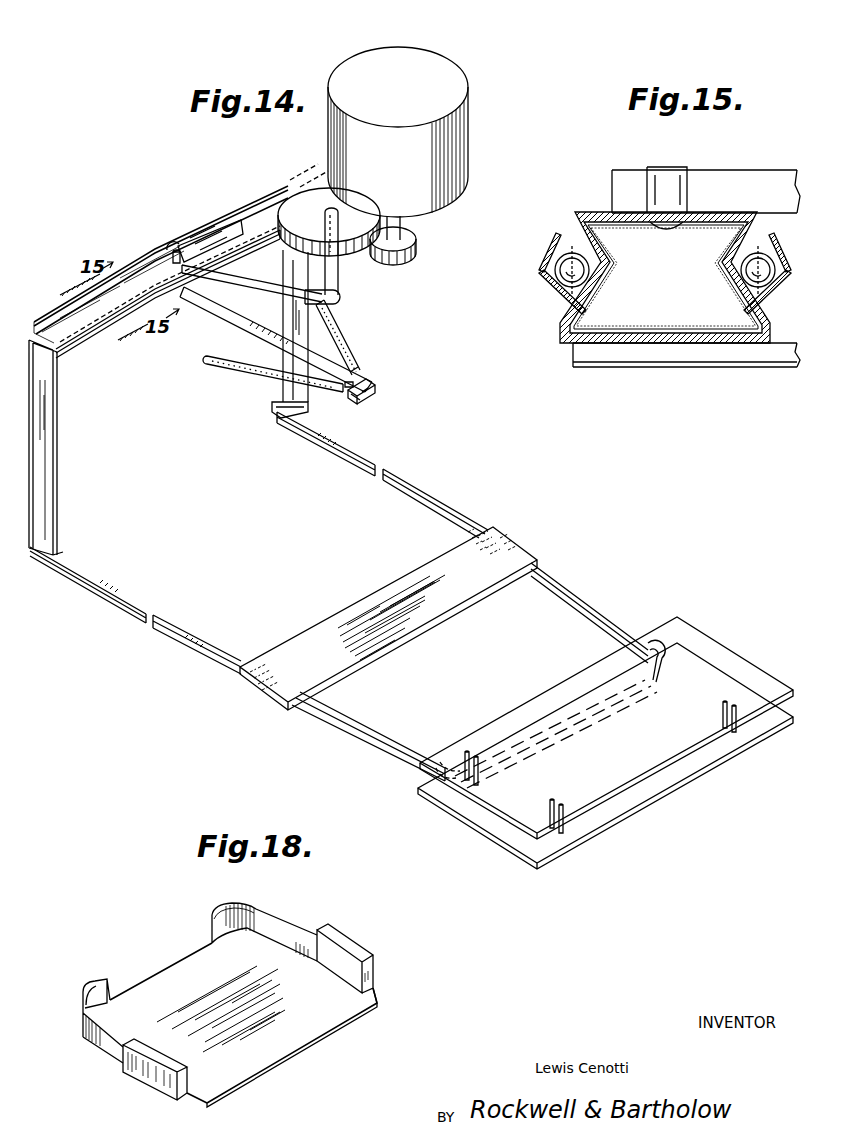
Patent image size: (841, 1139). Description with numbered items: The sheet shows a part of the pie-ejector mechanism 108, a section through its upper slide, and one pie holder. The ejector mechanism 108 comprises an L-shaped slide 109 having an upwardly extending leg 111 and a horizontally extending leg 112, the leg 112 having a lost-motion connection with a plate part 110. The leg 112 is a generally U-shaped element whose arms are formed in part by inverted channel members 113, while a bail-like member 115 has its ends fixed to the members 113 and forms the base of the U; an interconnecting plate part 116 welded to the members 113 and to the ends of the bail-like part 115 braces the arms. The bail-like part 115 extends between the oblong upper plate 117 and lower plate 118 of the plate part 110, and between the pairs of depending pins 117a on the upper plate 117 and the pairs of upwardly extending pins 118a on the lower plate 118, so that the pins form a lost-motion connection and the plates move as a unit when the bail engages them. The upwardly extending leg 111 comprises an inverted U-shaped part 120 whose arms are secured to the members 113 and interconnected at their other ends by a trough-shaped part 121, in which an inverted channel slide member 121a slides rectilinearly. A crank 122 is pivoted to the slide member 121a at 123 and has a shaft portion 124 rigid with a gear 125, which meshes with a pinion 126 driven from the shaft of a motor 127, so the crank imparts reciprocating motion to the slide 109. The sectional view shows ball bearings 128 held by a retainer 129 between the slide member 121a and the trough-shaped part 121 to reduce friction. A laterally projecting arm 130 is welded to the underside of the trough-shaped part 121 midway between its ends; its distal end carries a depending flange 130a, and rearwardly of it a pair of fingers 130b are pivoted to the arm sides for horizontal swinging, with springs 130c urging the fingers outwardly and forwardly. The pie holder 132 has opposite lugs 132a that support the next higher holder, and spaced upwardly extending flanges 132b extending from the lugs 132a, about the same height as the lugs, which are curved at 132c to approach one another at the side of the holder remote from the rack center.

In FIG. 14, the ejector mechanism 108 is at (265, 184).
In FIG. 14, the slide 109 is at (97, 605).
In FIG. 14, the plate part 110 is at (605, 735).
In FIG. 14, the upwardly extending leg 111 is at (57, 502).
In FIG. 14, the horizontally extending leg 112 is at (183, 655).
In FIG. 14, the inverted channel members 113 is at (408, 488).
In FIG. 14, the bail-like member 115 is at (580, 608).
In FIG. 14, the interconnecting plate part 116 is at (348, 613).
In FIG. 14, the upper plate 117 is at (682, 757).
In FIG. 14, the depending pins 117a is at (562, 800).
In FIG. 14, the lower plate 118 is at (625, 815).
In FIG. 14, the upwardly extending pins 118a is at (560, 832).
In FIG. 14, the inverted U-shaped part 120 is at (65, 470).
In FIG. 14, the trough-shaped part 121 is at (86, 330).
In FIG. 15, the trough-shaped part 121 is at (732, 345).
In FIG. 14, the slide member 121a is at (150, 274).
In FIG. 15, the slide member 121a is at (710, 212).
In FIG. 14, the crank 122 is at (231, 276).
In FIG. 14, the pivot 123 is at (172, 248).
In FIG. 15, the pivot 123 is at (676, 172).
In FIG. 14, the shaft portion 124 is at (345, 290).
In FIG. 14, the gear 125 is at (341, 245).
In FIG. 14, the pinion 126 is at (417, 245).
In FIG. 14, the motor 127 is at (468, 147).
In FIG. 15, the ball bearings 128 is at (560, 268).
In FIG. 15, the retainer 129 is at (600, 328).
In FIG. 14, the laterally projecting arm 130 is at (238, 314).
In FIG. 15, the laterally projecting arm 130 is at (685, 358).
In FIG. 14, the depending flange 130a is at (372, 400).
In FIG. 14, the fingers 130b is at (248, 370).
In FIG. 14, the springs 130c is at (357, 368).
In FIG. 18, the pie holder 132 is at (290, 1028).
In FIG. 18, the lugs 132a is at (340, 947).
In FIG. 18, the upwardly extending flanges 132b is at (293, 936).
In FIG. 18, the curved portions 132c is at (244, 905).